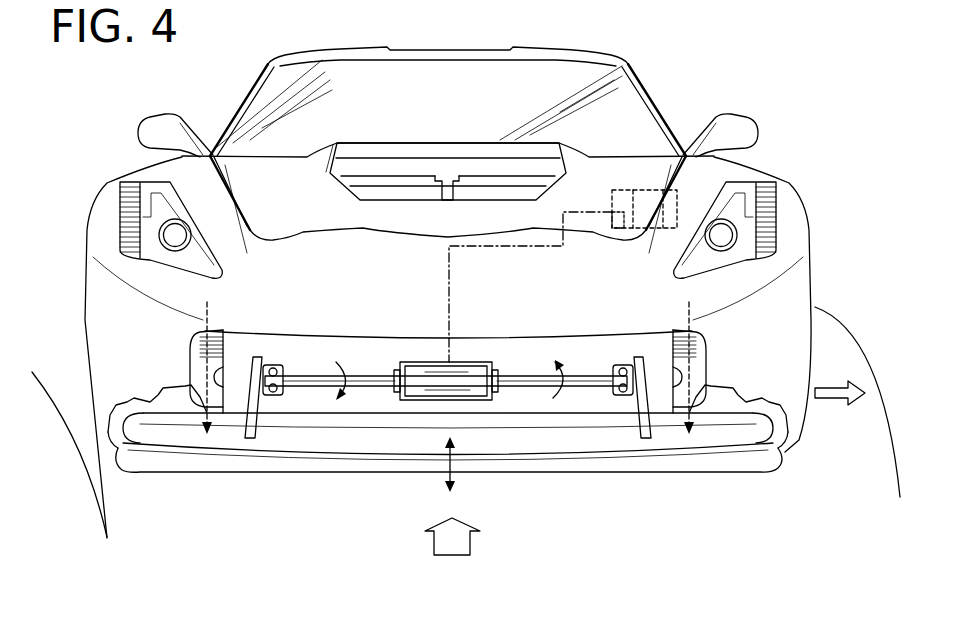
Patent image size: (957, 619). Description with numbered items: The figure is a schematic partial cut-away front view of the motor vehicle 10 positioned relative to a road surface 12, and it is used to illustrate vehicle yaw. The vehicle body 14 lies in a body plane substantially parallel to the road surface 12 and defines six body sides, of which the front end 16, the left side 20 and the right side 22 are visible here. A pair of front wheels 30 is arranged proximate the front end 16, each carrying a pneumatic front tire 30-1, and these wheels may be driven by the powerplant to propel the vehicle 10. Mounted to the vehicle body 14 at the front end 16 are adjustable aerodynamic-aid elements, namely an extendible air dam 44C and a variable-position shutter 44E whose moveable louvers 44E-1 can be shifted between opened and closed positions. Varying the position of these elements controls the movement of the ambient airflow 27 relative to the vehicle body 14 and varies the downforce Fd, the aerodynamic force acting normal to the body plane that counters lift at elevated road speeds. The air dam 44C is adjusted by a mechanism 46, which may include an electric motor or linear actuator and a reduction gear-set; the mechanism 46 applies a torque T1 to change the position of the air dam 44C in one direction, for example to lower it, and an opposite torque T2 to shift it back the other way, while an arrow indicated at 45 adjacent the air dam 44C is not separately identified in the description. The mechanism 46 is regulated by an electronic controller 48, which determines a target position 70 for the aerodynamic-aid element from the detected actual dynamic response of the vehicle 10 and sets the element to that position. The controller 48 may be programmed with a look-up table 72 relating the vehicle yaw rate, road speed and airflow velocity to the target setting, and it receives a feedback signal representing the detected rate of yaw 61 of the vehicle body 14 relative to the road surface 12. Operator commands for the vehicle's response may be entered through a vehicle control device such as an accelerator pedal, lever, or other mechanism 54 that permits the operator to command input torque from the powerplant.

The motor vehicle 10 is at (785, 128).
The road surface 12 is at (74, 367).
The vehicle body 14 is at (330, 92).
The front end 16 is at (165, 367).
The left side 20 is at (779, 187).
The right side 22 is at (117, 187).
The ambient airflow 27 is at (432, 533).
The front wheels 30 is at (173, 457).
The front tires 30-1 is at (203, 455).
The extendible air dam 44C is at (322, 468).
The variable-position shutter 44E is at (483, 177).
The moveable louvers 44E-1 is at (421, 193).
The vertical adjustment direction 45 is at (468, 470).
The mechanism 46 is at (508, 392).
The electronic controller 48 is at (640, 190).
The vehicle control device 54 is at (433, 400).
The yaw 61 is at (828, 406).
The target position 70 is at (664, 188).
The look-up table 72 is at (614, 200).
The torque T1 is at (337, 360).
The opposite torque T2 is at (559, 360).
The downforce Fd is at (212, 303).